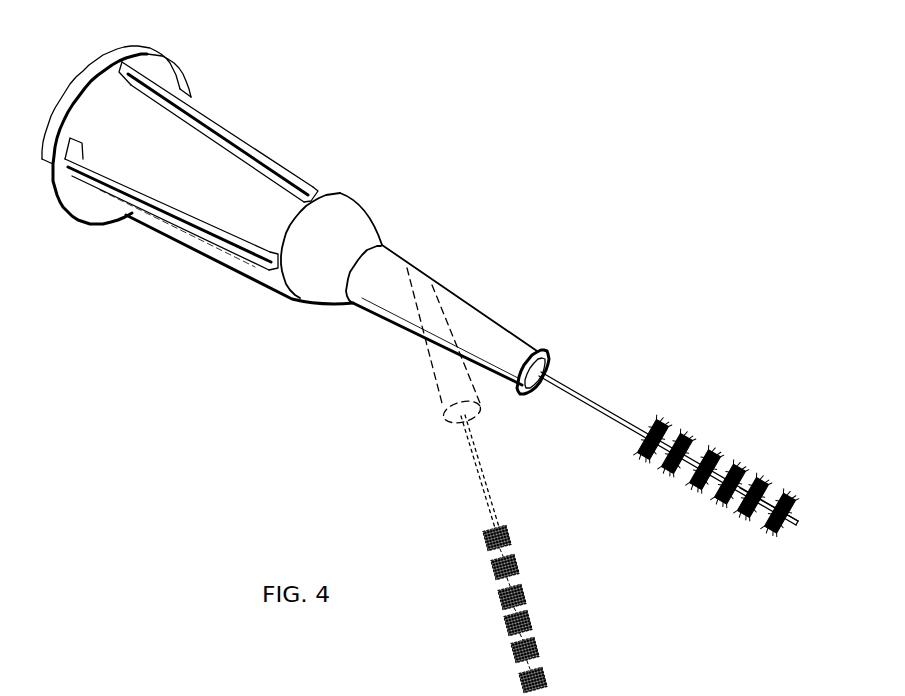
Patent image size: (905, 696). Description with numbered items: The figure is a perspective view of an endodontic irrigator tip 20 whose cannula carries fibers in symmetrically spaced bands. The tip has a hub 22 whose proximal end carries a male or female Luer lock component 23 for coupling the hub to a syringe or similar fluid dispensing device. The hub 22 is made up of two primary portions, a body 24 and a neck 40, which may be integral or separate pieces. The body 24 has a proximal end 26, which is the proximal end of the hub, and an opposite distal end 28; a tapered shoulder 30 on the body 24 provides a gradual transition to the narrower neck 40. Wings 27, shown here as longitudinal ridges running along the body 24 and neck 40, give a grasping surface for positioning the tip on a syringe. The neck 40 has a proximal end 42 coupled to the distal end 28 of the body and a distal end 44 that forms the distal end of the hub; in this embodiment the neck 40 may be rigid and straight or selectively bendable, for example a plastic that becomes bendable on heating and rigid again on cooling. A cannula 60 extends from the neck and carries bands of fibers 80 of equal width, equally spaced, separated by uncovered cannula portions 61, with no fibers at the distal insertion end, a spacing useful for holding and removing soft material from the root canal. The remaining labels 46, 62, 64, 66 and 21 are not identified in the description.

The endodontic irrigator tip 20 is at (517, 157).
The hub 22 is at (315, 133).
The Luer lock component 23 is at (140, 43).
The body 24 is at (273, 213).
The proximal end 26 is at (107, 235).
The wings 27 is at (212, 123).
The distal end 28 is at (383, 243).
The shoulder 30 is at (337, 220).
The neck 40 is at (491, 305).
The proximal end 42 is at (395, 255).
The distal end 44 is at (541, 357).
The tip opening 46 is at (549, 363).
The cannula 60 is at (607, 410).
The portions of the cannula not covered by fibers 61 is at (787, 507).
The brush wire stem 62 is at (562, 372).
The wire distal portion 64 is at (800, 508).
The wire distal end 66 is at (797, 527).
The bands of fibers 80 is at (724, 493).
The applicator (adjacent figure) 21 is at (100, 695).